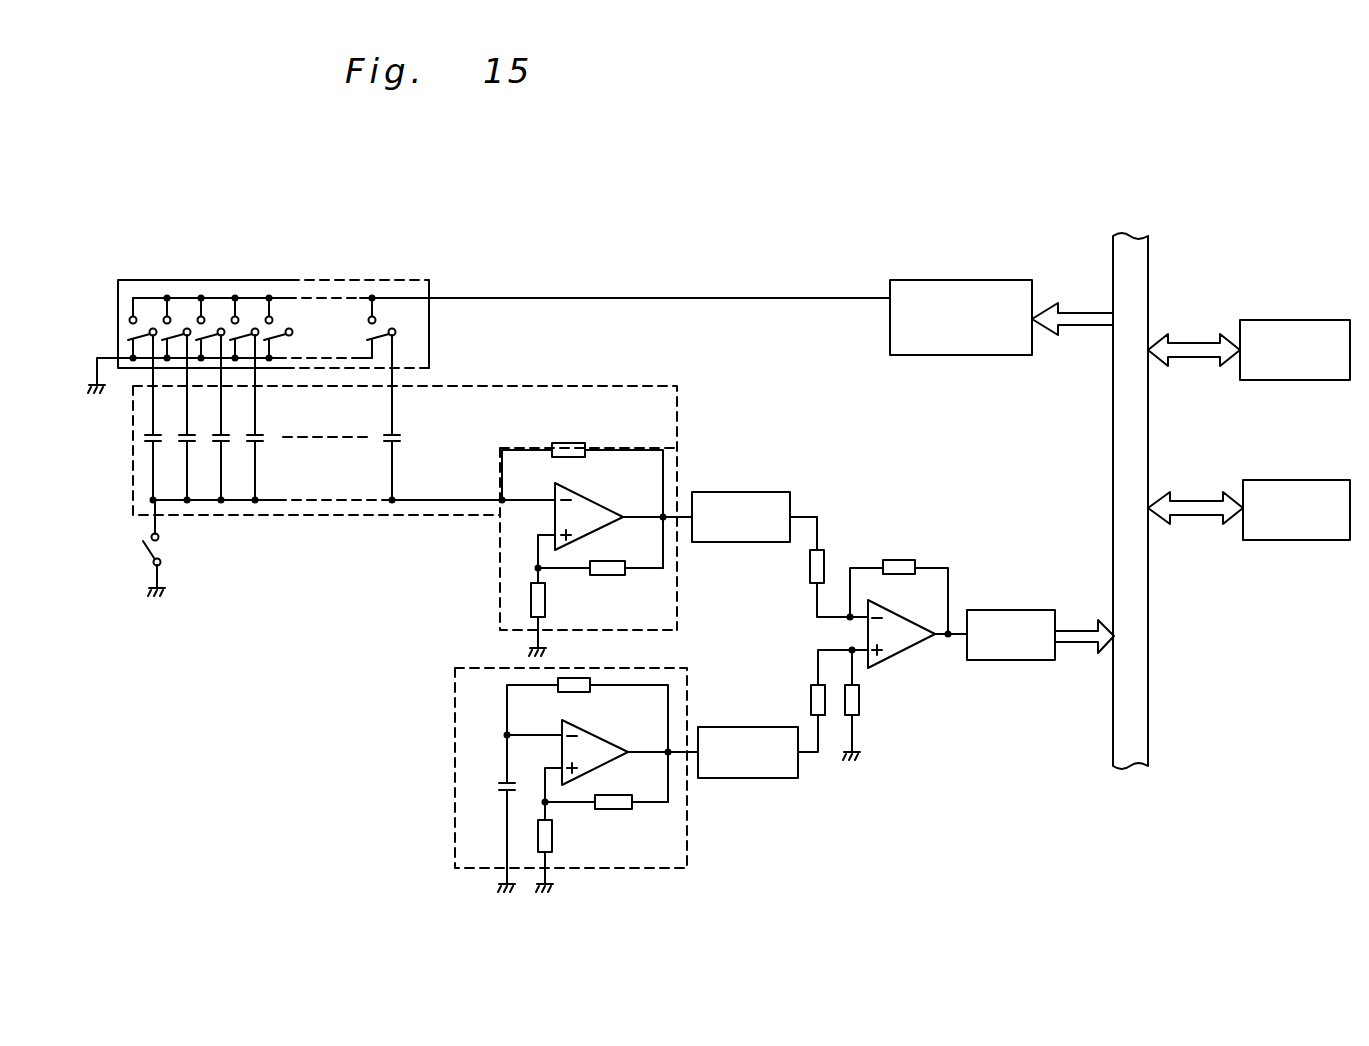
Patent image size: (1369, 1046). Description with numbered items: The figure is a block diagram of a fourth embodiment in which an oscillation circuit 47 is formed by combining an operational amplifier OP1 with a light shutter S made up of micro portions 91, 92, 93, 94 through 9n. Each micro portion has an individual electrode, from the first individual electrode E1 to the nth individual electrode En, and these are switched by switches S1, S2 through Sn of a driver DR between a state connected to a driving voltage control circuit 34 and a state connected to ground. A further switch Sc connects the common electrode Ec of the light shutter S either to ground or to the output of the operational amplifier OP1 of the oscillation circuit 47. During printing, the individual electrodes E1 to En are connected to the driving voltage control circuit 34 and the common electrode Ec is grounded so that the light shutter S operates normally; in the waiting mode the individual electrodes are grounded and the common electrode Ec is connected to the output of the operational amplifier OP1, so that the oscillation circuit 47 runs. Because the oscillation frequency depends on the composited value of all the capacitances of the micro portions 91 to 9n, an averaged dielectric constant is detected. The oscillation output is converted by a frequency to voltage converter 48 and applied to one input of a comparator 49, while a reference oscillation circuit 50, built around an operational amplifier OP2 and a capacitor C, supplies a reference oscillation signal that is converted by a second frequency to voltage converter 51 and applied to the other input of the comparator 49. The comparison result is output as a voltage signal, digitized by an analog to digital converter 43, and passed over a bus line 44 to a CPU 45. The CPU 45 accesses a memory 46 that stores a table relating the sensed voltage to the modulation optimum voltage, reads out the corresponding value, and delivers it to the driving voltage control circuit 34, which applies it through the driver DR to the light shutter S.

The switch S1 is at (143, 323).
The switch S2 is at (173, 335).
The switch Sn is at (388, 326).
The driver DR is at (432, 284).
The light shutter S is at (450, 427).
The individual electrode E1 is at (152, 375).
The individual electrode En is at (395, 377).
The common electrode Ec is at (417, 513).
The switch Sc is at (171, 548).
The micro portion 91 is at (162, 452).
The micro portion 92 is at (195, 452).
The micro portion 93 is at (229, 452).
The micro portion 94 is at (265, 452).
The micro portion 9n is at (405, 452).
The oscillation circuit 47 is at (596, 486).
The operational amplifier OP1 is at (625, 483).
The frequency-to-voltage converter (1) 48 is at (763, 490).
The comparator 49 is at (908, 650).
The analog to digital converter 43 is at (1022, 610).
The reference oscillation circuit 50 is at (629, 780).
The operational amplifier OP2 is at (600, 739).
The reference capacitor C is at (491, 813).
The frequency to voltage converter 51 is at (752, 727).
The driving voltage control circuit 34 is at (977, 280).
The bus line 44 is at (1147, 270).
The CPU 45 is at (1310, 320).
The memory 46 is at (1295, 480).